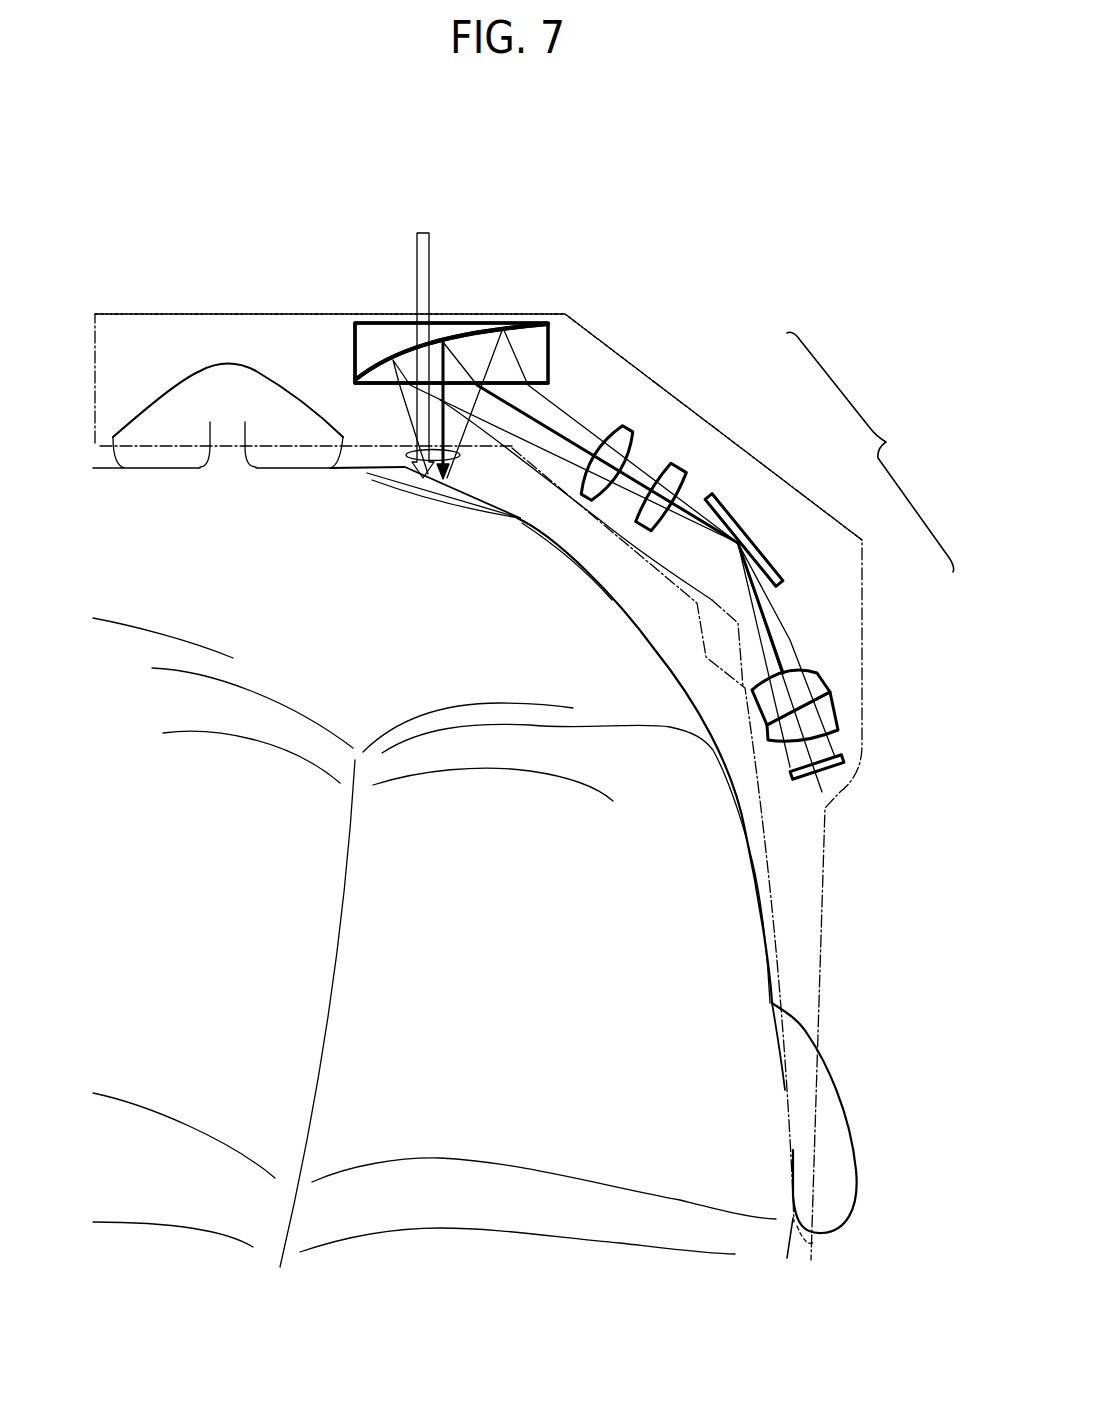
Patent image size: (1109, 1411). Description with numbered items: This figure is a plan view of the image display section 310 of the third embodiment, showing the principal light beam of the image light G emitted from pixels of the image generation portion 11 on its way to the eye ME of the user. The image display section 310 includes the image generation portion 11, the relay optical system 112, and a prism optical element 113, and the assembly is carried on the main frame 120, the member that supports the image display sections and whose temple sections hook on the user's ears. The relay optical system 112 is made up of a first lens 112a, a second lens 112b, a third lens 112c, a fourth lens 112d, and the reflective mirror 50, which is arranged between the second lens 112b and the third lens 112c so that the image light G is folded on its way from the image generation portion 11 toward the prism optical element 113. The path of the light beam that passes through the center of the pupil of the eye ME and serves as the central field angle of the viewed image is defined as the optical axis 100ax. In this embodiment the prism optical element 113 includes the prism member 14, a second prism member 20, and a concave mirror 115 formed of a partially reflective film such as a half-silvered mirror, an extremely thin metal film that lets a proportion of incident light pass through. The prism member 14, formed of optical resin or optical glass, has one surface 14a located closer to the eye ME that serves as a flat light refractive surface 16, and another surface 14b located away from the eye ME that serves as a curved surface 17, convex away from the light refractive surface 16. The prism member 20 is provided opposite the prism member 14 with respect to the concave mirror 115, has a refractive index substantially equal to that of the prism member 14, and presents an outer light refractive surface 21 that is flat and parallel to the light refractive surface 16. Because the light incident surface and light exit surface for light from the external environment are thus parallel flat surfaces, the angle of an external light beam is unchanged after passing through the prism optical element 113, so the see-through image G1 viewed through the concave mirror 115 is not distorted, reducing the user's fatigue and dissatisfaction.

The image display section 310 is at (713, 246).
The main frame 120 is at (158, 316).
The relay optical system 112 is at (697, 777).
The first lens 112a is at (832, 713).
The second lens 112b is at (819, 673).
The third lens 112c is at (673, 477).
The fourth lens 112d is at (623, 424).
The reflective mirror 50 is at (712, 502).
The image generation portion 11 is at (822, 772).
The optical axis 100ax is at (813, 752).
The prism member 14 is at (537, 362).
The one surface 14a is at (377, 384).
The light refractive surface 16 is at (433, 466).
The another surface 14b is at (490, 328).
The curved surface 17 is at (471, 296).
The prism member 20 is at (357, 340).
The outer light refractive surface 21 is at (366, 322).
The prism optical element 113 is at (365, 394).
The concave mirror 115 is at (460, 336).
The see-through image G1 is at (421, 232).
The image light G is at (469, 455).
The eye ME is at (451, 488).